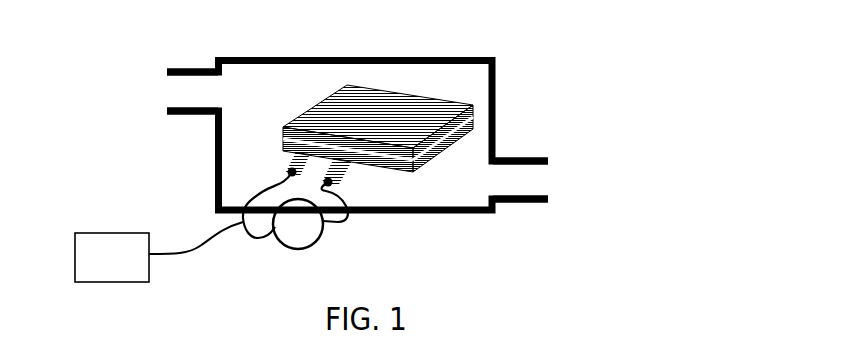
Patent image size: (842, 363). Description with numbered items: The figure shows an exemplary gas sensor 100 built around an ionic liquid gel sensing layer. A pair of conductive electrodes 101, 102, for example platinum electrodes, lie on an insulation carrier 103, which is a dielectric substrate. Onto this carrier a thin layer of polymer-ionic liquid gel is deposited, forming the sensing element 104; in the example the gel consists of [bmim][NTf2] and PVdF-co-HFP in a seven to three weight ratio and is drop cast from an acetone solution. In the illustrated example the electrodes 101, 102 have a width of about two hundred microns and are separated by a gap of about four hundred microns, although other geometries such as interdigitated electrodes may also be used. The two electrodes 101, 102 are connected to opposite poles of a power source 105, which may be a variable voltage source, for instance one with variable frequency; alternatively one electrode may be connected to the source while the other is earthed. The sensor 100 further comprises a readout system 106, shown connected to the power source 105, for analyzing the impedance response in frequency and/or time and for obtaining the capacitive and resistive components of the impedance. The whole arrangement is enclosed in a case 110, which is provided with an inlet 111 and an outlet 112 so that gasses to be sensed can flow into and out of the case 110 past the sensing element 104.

The sensor 100 is at (187, 38).
The conductive electrode 101 is at (288, 170).
The conductive electrode 102 is at (357, 173).
The insulation carrier 103 is at (464, 114).
The sensing element 104 is at (443, 100).
The power source 105 is at (320, 233).
The readout system 106 is at (133, 270).
The case 110 is at (282, 96).
The inlet 111 is at (157, 93).
The outlet 112 is at (554, 180).